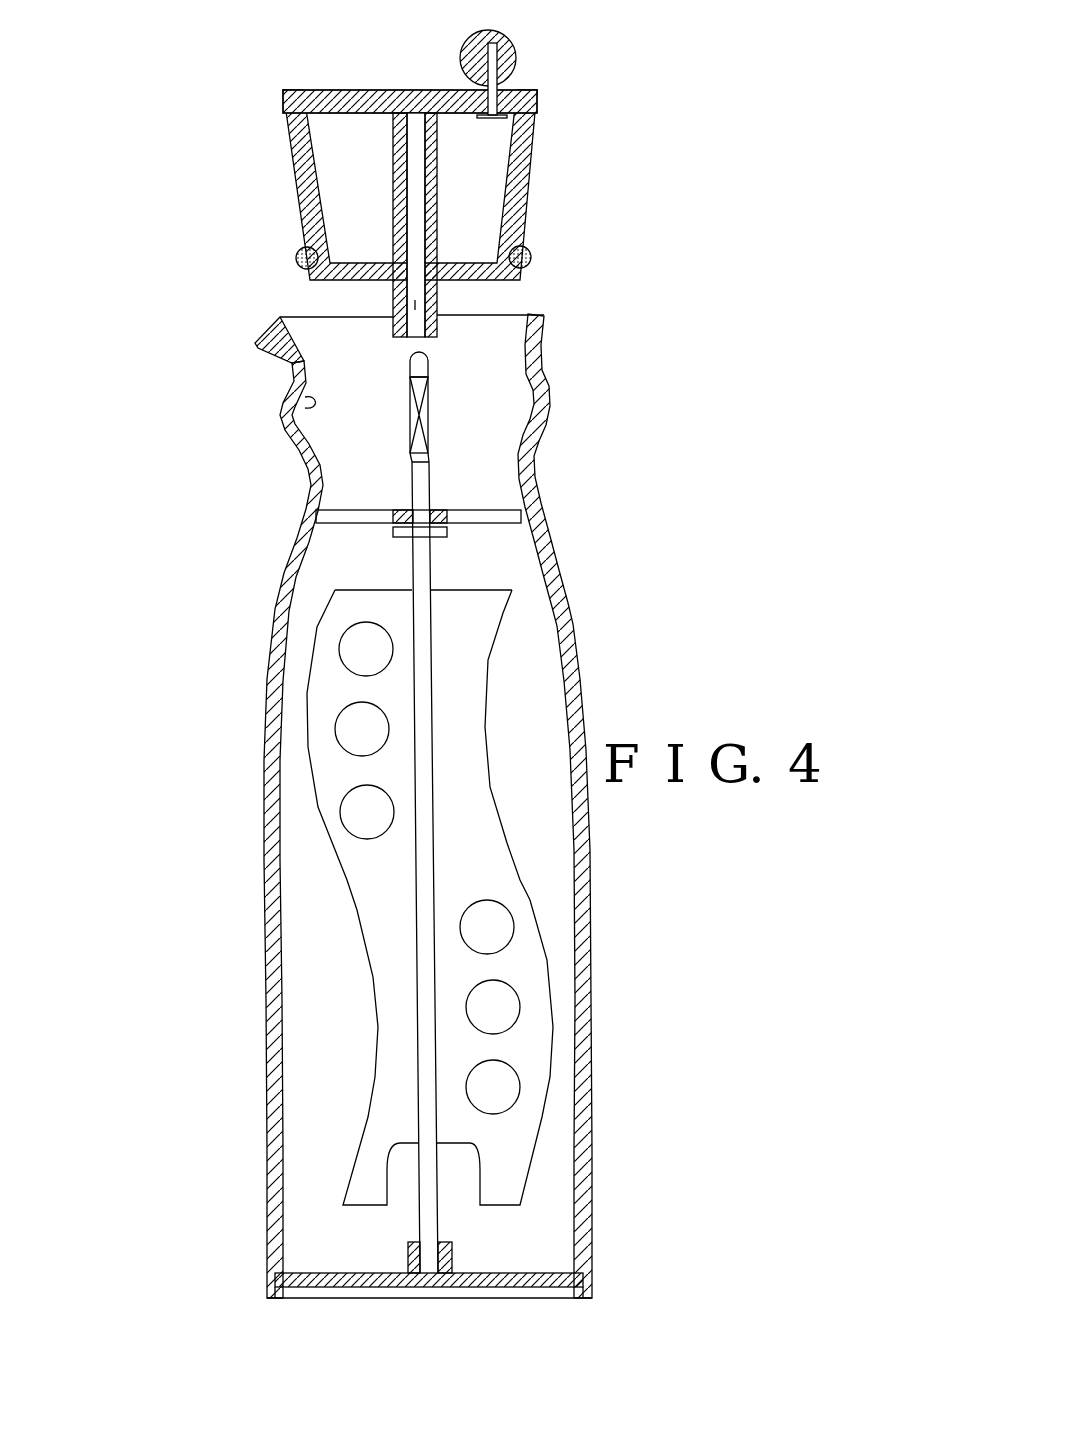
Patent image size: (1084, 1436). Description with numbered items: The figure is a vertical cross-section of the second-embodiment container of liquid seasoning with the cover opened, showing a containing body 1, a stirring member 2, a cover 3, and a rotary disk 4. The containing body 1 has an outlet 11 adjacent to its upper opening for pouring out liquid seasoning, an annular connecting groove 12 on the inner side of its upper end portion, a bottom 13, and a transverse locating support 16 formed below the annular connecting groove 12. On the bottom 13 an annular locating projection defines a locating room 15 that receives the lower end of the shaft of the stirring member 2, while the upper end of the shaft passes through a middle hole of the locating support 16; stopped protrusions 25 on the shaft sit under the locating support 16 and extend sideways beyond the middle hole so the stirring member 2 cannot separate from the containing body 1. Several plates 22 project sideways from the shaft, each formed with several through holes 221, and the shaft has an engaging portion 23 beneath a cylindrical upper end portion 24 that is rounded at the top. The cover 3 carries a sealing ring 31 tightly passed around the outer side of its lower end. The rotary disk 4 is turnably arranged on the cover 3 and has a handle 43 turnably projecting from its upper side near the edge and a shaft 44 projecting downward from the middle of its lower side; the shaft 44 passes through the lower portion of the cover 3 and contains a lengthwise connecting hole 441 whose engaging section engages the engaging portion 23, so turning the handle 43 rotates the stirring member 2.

The containing body 1 is at (287, 545).
The outlet 11 is at (283, 330).
The annular connecting groove 12 is at (283, 417).
The bottom 13 is at (522, 1281).
The locating room 15 is at (420, 1250).
The transverse locating support 16 is at (443, 510).
The stirring member 2 is at (400, 572).
The plates 22 is at (465, 702).
The through holes 221 is at (493, 927).
The engaging portion 23 is at (425, 417).
The cylindrical upper end portion 24 is at (427, 358).
The stopped protrusions 25 is at (435, 537).
The cover 3 is at (300, 150).
The sealing ring 31 is at (297, 255).
The rotary disk 4 is at (372, 95).
The handle 43 is at (515, 50).
The shaft 44 is at (440, 297).
The connecting hole 441 is at (415, 308).